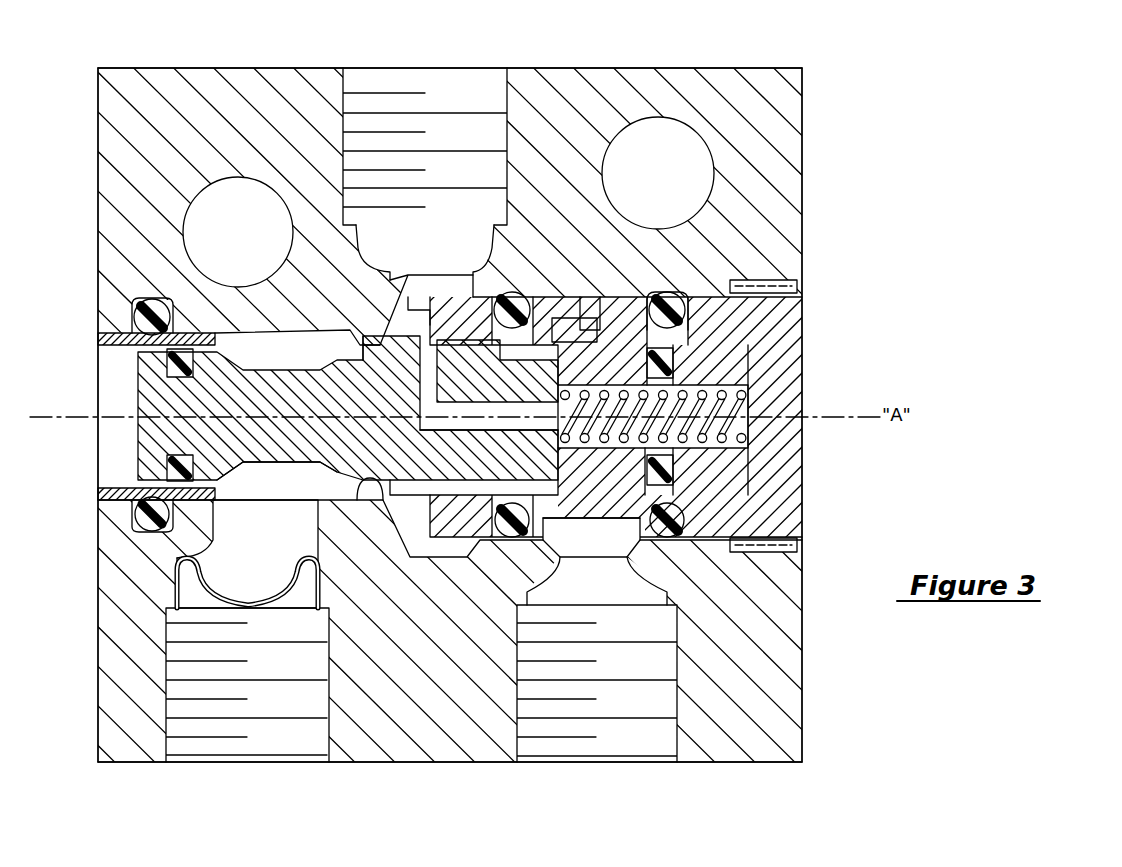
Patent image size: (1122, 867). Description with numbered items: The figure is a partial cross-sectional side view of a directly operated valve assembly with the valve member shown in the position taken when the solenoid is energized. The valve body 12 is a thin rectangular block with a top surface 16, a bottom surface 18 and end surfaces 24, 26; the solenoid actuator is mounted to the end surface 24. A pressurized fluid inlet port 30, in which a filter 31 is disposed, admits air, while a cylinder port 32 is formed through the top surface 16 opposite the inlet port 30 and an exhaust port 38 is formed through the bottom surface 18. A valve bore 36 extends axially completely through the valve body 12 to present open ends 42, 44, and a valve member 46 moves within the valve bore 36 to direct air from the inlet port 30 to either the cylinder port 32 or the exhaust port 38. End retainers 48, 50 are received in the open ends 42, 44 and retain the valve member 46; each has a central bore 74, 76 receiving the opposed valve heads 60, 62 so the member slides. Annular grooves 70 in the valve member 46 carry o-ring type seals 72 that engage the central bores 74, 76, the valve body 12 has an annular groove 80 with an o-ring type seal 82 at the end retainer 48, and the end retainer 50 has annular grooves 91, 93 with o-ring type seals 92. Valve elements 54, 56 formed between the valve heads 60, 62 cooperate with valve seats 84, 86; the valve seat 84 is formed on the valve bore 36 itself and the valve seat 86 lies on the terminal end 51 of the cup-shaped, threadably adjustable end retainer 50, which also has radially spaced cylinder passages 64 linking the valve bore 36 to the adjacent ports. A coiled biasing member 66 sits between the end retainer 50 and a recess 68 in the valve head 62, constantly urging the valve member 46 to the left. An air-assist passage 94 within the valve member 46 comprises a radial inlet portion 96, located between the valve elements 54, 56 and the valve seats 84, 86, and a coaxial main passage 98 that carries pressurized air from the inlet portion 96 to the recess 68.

The valve body 12 is at (585, 58).
The top surface 16 is at (764, 68).
The bottom surface 18 is at (398, 765).
The end surface 24 is at (98, 96).
The end surface 26 is at (802, 183).
The pressurized fluid inlet port 30 is at (250, 762).
The filter 31 is at (258, 600).
The cylinder port 32 is at (465, 90).
The valve bore 36 is at (268, 366).
The exhaust port 38 is at (605, 762).
The open end 42 is at (98, 338).
The open end 44 is at (800, 291).
The valve member 46 is at (272, 470).
The end retainer 48 is at (98, 494).
The end retainer 50 is at (805, 312).
The terminal end 51 is at (482, 548).
The valve element 54 is at (395, 360).
The valve element 56 is at (467, 372).
The valve head 60 is at (250, 500).
The valve head 62 is at (745, 482).
The cylinder passages 64 is at (592, 300).
The biasing member 66 is at (700, 387).
The recess 68 is at (582, 516).
The annular grooves 70 is at (165, 470).
The o-ring type seals 72 is at (165, 456).
The central bore 74 is at (126, 362).
The central bore 76 is at (770, 356).
The annular groove 80 is at (132, 306).
The o-ring type seal 82 is at (175, 316).
The valve seat 84 is at (376, 500).
The valve seat 86 is at (472, 466).
The annular groove 91 is at (554, 300).
The o-ring type seals 92 is at (515, 293).
The annular groove 93 is at (660, 296).
The air-assist passage 94 is at (402, 482).
The inlet portion 96 is at (428, 327).
The main passage 98 is at (552, 396).